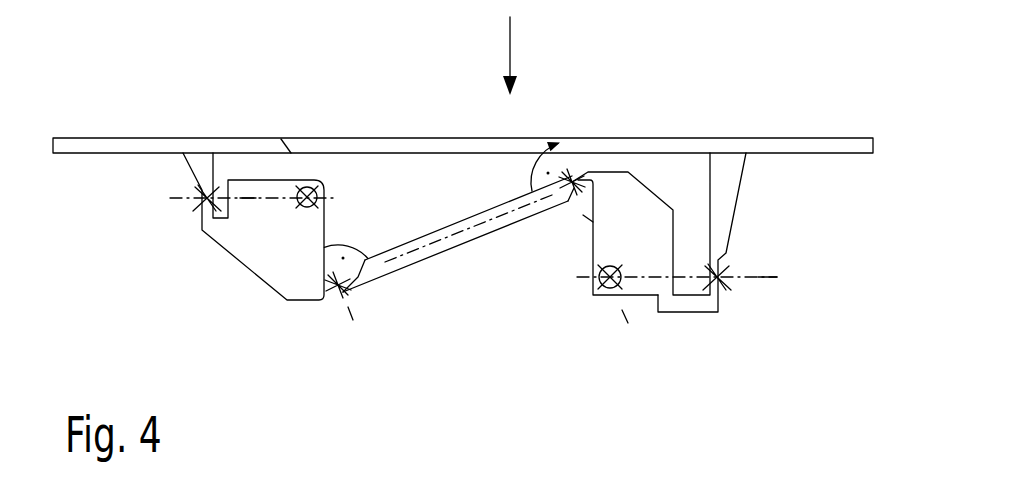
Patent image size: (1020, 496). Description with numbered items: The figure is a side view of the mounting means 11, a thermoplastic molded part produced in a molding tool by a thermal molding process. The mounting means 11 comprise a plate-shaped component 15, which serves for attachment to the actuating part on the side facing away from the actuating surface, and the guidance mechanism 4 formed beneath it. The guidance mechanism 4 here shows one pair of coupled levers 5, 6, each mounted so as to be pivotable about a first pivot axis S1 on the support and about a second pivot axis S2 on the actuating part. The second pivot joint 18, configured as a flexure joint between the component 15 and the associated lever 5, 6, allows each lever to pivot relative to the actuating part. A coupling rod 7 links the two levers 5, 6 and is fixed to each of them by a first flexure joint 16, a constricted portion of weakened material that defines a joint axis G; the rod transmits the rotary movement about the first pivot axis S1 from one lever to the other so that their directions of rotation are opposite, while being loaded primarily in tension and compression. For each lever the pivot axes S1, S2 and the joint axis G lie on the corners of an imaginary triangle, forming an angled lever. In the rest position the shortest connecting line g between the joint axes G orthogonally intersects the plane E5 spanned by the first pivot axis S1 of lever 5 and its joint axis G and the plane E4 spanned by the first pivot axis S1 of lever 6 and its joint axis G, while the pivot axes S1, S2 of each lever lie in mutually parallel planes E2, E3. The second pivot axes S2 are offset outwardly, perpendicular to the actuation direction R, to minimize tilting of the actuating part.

The guidance mechanism 4 is at (467, 280).
The lever 5 is at (647, 212).
The lever 6 is at (266, 216).
The coupling rod 7 is at (472, 226).
The mounting means 11 is at (838, 190).
The plate-shaped component 15 is at (826, 137).
The first flexure joint 16 is at (571, 178).
The second pivot joint 18 is at (185, 158).
The actuation direction R is at (517, 56).
The joint axis G is at (343, 232).
The shortest connecting line g is at (396, 257).
The first pivot axis S1 is at (310, 186).
The second pivot axis S2 is at (206, 196).
The plane E2 is at (765, 275).
The plane E3 is at (248, 203).
The plane E4 is at (306, 160).
The plane E5 is at (587, 220).